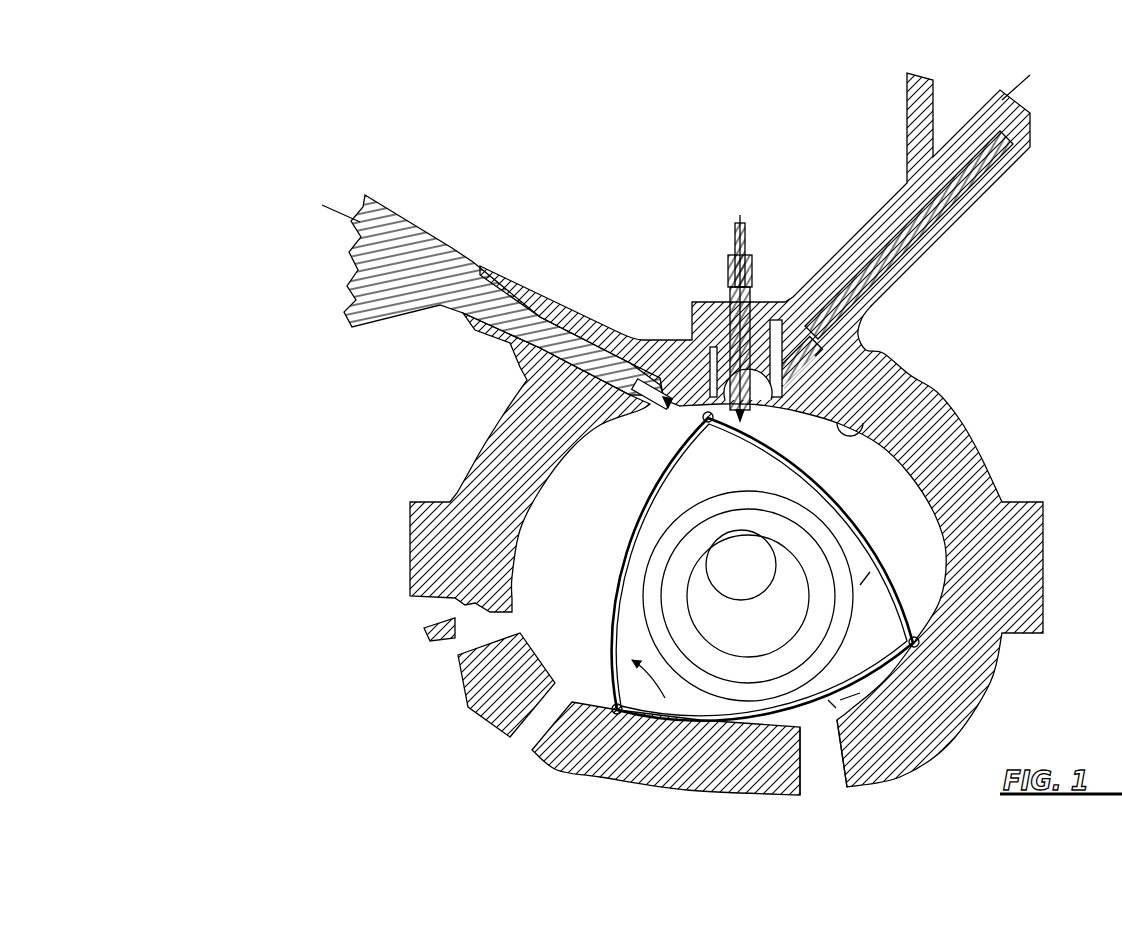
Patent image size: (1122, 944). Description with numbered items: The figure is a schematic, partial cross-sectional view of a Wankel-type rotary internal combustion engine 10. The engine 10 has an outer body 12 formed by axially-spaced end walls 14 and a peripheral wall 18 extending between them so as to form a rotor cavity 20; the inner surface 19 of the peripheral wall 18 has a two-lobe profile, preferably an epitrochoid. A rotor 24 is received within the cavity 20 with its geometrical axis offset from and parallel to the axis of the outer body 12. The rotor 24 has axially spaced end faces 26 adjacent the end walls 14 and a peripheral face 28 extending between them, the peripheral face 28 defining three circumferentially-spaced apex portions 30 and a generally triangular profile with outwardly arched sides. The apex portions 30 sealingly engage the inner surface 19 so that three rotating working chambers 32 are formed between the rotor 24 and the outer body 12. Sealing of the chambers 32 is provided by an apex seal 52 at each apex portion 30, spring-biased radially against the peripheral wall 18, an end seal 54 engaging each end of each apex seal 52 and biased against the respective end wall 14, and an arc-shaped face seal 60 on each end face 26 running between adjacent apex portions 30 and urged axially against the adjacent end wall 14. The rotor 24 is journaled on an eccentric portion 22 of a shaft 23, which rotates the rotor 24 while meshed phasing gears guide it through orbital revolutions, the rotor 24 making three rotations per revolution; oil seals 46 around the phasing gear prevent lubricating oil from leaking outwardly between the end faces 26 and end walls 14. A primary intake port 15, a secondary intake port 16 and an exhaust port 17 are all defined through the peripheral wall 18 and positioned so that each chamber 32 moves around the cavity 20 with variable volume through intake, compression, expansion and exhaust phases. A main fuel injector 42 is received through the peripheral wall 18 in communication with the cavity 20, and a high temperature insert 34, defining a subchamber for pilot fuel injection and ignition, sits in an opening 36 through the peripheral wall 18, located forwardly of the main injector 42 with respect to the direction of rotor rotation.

The rotary internal combustion engine 10 is at (638, 446).
The outer body 12 is at (713, 446).
The end walls 14 is at (792, 430).
The primary intake port 15 is at (467, 640).
The secondary intake port 16 is at (537, 733).
The exhaust port 17 is at (820, 773).
The peripheral wall 18 is at (792, 430).
The inner surface 19 is at (870, 428).
The rotor cavity 20 is at (927, 570).
The eccentric portion 22 is at (768, 596).
The shaft 23 is at (755, 570).
The rotor 24 is at (868, 688).
The end faces 26 is at (865, 578).
The peripheral face 28 is at (811, 615).
The apex portions 30 is at (935, 648).
The working chambers 32 is at (876, 484).
The high temperature insert 34 is at (765, 302).
The opening 36 is at (722, 305).
The main fuel injector 42 is at (470, 265).
The oil seals 46 is at (744, 569).
The apex seal 52 is at (613, 713).
The end seal 54 is at (615, 706).
The face seal 60 is at (674, 717).